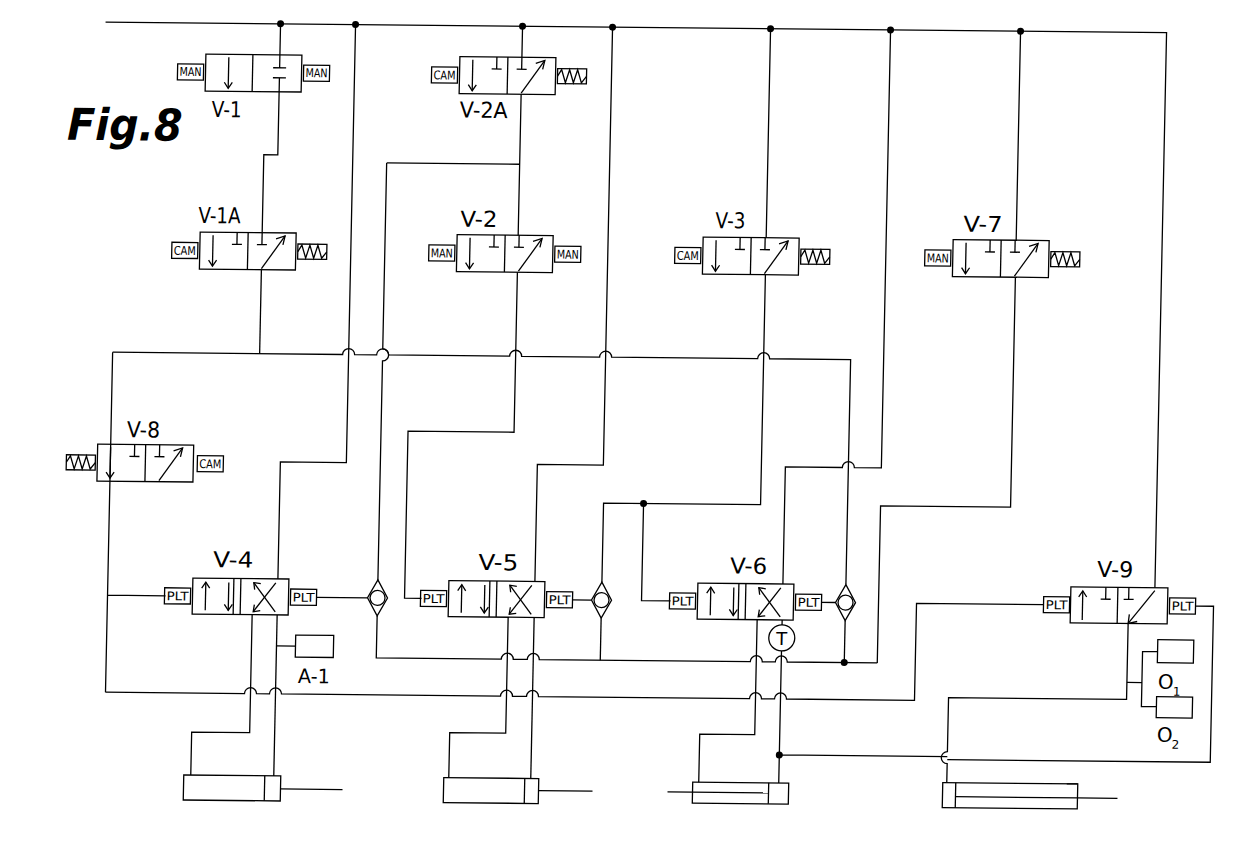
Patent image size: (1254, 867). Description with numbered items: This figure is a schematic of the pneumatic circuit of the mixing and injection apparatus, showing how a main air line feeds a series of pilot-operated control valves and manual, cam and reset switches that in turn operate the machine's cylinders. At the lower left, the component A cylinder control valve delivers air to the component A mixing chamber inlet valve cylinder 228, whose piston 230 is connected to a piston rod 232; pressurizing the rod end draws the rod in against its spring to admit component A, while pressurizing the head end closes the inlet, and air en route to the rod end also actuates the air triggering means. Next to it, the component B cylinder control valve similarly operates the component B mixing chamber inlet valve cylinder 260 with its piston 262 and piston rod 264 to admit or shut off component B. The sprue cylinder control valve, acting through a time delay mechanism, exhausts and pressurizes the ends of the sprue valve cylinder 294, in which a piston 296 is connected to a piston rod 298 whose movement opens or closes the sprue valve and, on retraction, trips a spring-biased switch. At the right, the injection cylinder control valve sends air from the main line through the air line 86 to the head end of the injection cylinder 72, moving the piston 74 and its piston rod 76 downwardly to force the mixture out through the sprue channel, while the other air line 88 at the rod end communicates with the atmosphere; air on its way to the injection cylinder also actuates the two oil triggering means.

The component A mixing chamber inlet valve cylinder 228 is at (229, 754).
The piston 230 is at (278, 776).
The piston rod 232 is at (319, 785).
The component B mixing chamber inlet valve cylinder 260 is at (478, 775).
The piston 262 is at (539, 782).
The piston rod 264 is at (568, 787).
The sprue valve cylinder 294 is at (731, 779).
The piston 296 is at (805, 792).
The piston rod 298 is at (691, 787).
The air line 86 is at (965, 721).
The injection cylinder 72 is at (1044, 760).
The piston 74 is at (977, 780).
The air line 88 is at (1083, 759).
The piston rod 76 is at (1113, 785).